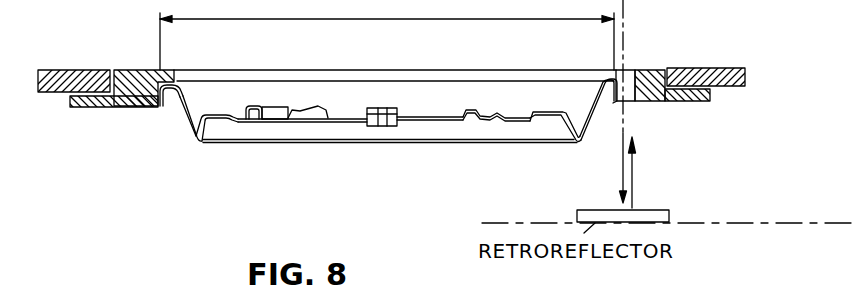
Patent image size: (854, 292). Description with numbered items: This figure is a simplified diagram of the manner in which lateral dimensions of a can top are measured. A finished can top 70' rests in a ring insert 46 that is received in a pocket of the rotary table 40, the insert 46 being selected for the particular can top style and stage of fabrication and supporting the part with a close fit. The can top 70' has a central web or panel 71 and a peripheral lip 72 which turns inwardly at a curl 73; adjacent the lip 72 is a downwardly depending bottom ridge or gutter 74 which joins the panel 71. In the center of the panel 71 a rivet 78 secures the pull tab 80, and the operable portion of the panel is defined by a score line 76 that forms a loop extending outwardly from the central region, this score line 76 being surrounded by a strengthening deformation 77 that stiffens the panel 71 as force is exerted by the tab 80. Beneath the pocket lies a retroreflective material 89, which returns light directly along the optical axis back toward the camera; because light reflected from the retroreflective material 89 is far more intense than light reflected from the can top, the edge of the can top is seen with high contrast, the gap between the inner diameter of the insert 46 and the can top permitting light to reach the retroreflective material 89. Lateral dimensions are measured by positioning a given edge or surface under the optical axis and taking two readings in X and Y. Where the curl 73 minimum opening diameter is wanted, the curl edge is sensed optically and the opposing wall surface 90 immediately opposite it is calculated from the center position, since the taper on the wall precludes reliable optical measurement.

The rotary table 40 is at (61, 69).
The ring insert 46 is at (115, 106).
The finished can top 70' is at (395, 88).
The central web or panel 71 is at (240, 118).
The peripheral lip 72 is at (602, 68).
The curl 73 is at (170, 108).
The bottom ridge or gutter 74 is at (213, 124).
The score line 76 is at (507, 116).
The strengthening deformation 77 is at (526, 116).
The rivet 78 is at (377, 108).
The pull tab 80 is at (255, 105).
The retroreflective material 89 is at (657, 209).
The opposing wall surface 90 is at (182, 130).